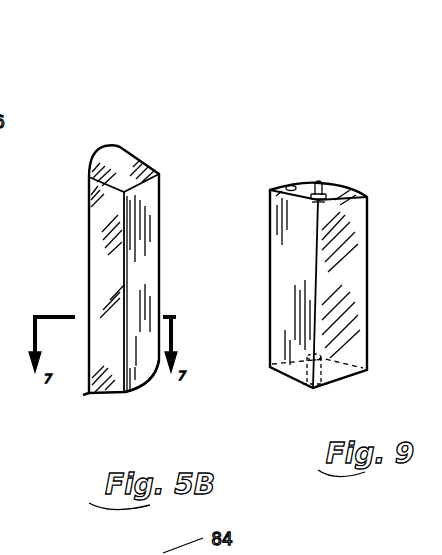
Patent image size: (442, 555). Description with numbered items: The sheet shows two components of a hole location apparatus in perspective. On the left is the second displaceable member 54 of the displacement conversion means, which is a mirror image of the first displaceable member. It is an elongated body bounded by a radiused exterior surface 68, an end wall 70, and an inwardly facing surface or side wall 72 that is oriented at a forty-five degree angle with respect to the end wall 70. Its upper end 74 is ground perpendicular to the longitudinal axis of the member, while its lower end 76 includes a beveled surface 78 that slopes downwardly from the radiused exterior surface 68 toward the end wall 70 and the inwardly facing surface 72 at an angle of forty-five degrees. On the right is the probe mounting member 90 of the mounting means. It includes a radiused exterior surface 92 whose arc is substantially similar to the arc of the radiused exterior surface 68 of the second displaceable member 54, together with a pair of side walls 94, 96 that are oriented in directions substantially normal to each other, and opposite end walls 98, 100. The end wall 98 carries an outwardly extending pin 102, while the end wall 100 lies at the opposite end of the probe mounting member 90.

In FIG. 5B, the second displaceable member 54 is at (69, 398).
In FIG. 5B, the radiused exterior surface 68 is at (88, 177).
In FIG. 5B, the end wall 70 is at (157, 217).
In FIG. 5B, the inwardly facing surface 72 is at (102, 268).
In FIG. 5B, the upper end 74 is at (143, 390).
In FIG. 5B, the lower end 76 is at (94, 150).
In FIG. 5B, the beveled surface 78 is at (126, 155).
In FIG. 9, the probe mounting member 90 is at (254, 307).
In FIG. 9, the radiused exterior surface 92 is at (360, 187).
In FIG. 9, the side wall 94 is at (298, 301).
In FIG. 9, the side wall 96 is at (349, 249).
In FIG. 9, the end wall 98 is at (289, 186).
In FIG. 9, the end wall 100 is at (328, 383).
In FIG. 9, the pin 102 is at (320, 180).